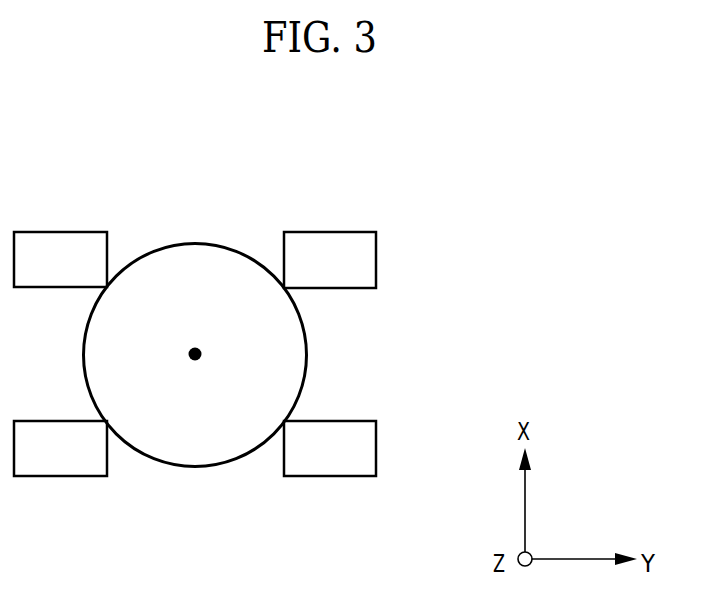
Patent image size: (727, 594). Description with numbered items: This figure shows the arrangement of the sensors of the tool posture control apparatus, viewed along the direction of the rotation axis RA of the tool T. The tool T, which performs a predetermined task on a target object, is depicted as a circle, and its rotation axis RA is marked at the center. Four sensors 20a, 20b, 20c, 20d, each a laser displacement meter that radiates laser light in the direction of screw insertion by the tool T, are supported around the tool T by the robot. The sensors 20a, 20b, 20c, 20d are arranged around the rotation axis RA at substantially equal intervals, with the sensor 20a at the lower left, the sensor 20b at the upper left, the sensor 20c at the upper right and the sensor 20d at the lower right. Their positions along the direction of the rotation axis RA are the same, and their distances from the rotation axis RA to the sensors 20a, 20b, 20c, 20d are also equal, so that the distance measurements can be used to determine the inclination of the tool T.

The tool T is at (190, 243).
The rotation axis RA is at (201, 354).
The sensor 20a is at (55, 477).
The sensor 20b is at (55, 232).
The sensor 20c is at (325, 232).
The sensor 20d is at (325, 477).